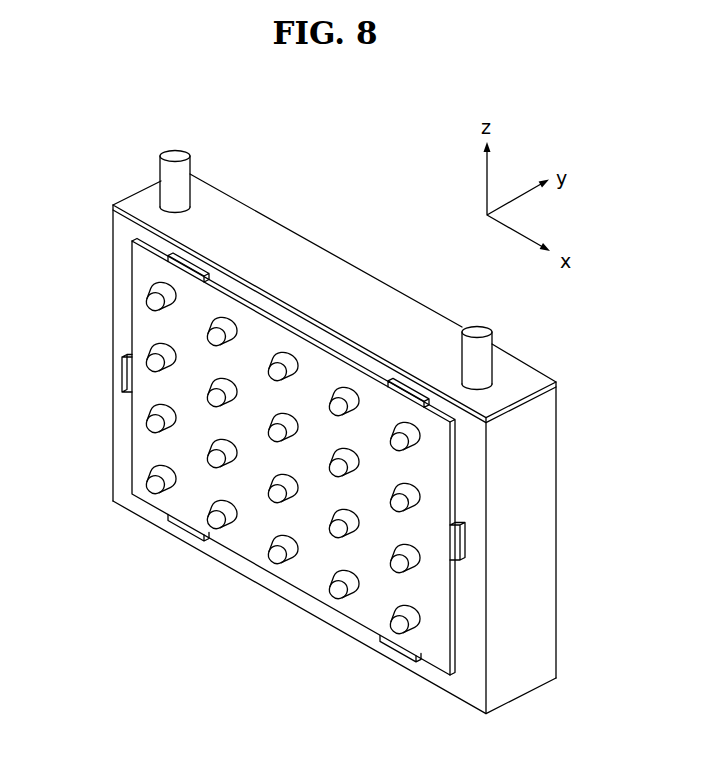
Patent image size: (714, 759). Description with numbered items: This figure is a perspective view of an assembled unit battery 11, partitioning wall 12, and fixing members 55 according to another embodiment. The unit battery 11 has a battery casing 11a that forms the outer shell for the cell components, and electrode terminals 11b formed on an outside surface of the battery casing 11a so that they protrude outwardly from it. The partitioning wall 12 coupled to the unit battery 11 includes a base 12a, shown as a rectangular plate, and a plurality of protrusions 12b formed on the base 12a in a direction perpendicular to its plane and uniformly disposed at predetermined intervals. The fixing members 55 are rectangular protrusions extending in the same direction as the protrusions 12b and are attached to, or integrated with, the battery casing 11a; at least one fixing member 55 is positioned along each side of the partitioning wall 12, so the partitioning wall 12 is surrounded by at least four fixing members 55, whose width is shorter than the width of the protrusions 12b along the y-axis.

The unit battery 11 is at (302, 430).
The battery casing 11a is at (113, 272).
The electrode terminals 11b is at (163, 173).
The partitioning wall 12 is at (261, 470).
The base 12a is at (243, 552).
The protrusions 12b is at (336, 591).
The fixing members 55 is at (122, 372).